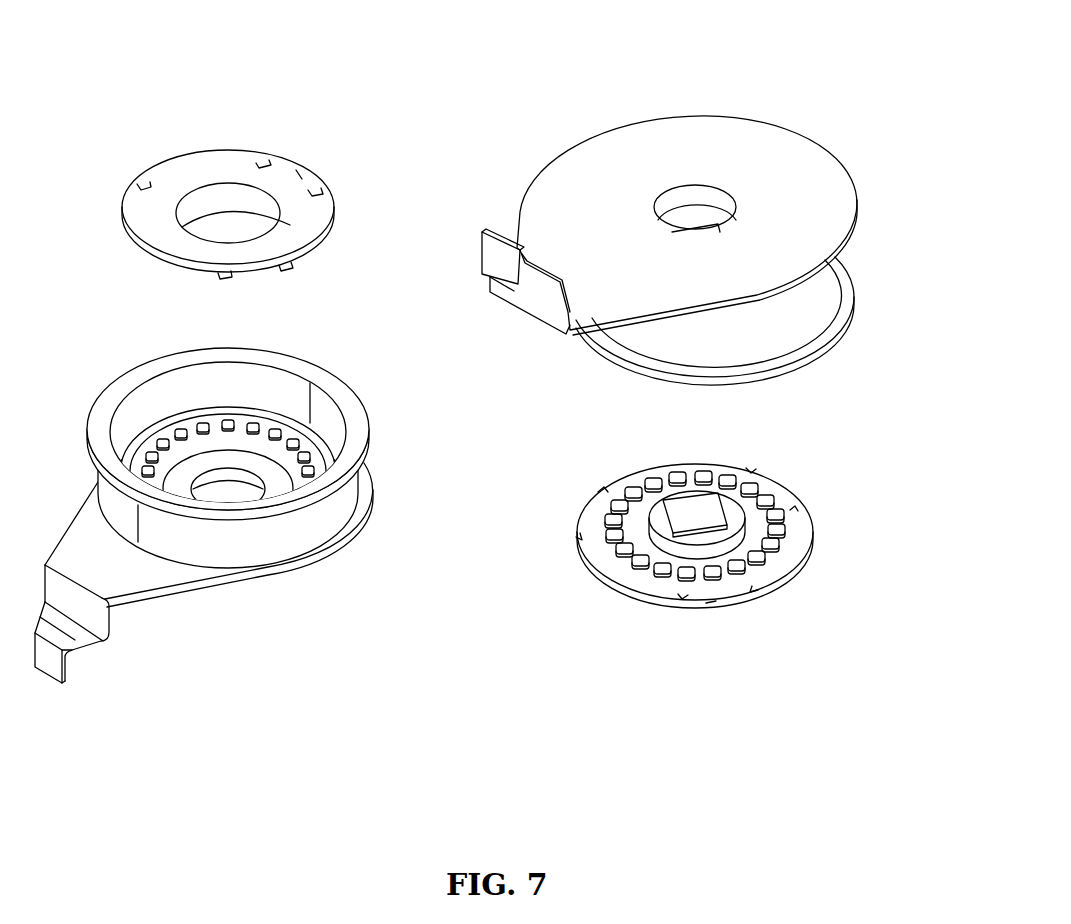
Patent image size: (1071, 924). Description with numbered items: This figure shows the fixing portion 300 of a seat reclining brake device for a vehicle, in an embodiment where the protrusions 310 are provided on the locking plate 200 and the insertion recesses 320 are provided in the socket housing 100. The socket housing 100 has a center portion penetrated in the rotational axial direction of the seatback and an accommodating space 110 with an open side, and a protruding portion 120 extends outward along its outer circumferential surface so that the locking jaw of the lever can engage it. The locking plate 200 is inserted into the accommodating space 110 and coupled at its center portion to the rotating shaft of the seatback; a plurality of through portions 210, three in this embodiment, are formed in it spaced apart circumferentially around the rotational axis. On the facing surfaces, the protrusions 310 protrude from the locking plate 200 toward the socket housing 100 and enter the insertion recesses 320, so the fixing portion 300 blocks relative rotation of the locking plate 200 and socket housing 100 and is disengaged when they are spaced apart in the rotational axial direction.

The socket housing 100 is at (690, 100).
The accommodating space 110 is at (313, 447).
The protruding portion 120 is at (323, 383).
The locking plate 200 is at (222, 140).
The through portion 210 is at (297, 173).
The fixing portion 300 is at (771, 643).
The protrusion 310 is at (778, 543).
The insertion recess 320 is at (337, 462).